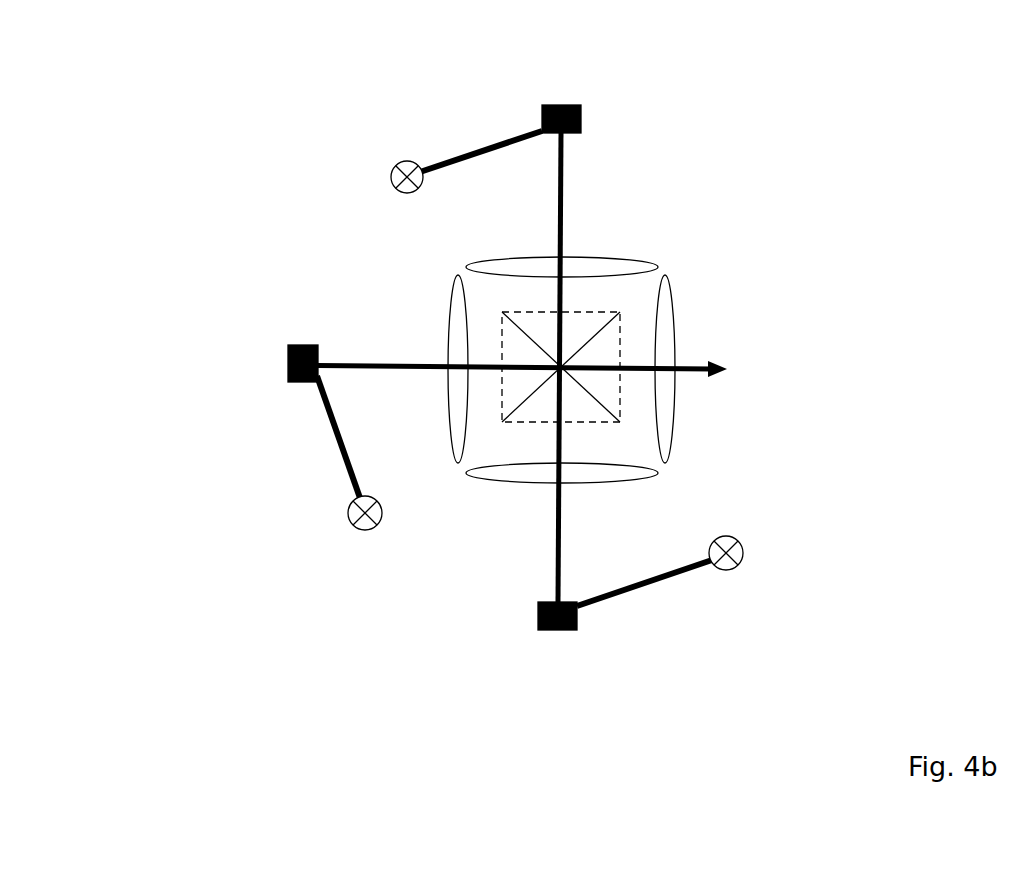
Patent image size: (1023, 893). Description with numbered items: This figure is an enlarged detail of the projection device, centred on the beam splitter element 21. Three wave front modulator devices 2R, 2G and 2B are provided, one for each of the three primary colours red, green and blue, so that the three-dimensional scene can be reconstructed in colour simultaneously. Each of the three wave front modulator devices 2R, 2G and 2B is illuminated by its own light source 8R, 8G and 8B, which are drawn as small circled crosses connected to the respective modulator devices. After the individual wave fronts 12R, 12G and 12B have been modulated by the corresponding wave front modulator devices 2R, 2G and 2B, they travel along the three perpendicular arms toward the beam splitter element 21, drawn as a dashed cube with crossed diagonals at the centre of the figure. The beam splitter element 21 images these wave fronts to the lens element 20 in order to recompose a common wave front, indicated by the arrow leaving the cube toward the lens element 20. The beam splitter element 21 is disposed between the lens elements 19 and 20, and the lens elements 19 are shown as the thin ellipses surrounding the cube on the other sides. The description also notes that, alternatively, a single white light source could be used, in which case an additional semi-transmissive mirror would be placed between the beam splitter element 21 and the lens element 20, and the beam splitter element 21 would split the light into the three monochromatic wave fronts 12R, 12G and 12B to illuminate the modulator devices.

The wave front modulator device 2R is at (568, 105).
The wave front modulator device 2G is at (287, 347).
The wave front modulator device 2B is at (567, 630).
The light source 8R is at (397, 163).
The light source 8G is at (350, 518).
The light source 8B is at (735, 573).
The wave front 12R is at (565, 157).
The wave front 12G is at (350, 363).
The wave front 12B is at (555, 548).
The lens element 19 is at (598, 257).
The lens element 20 is at (673, 432).
The beam splitter element 21 is at (580, 327).